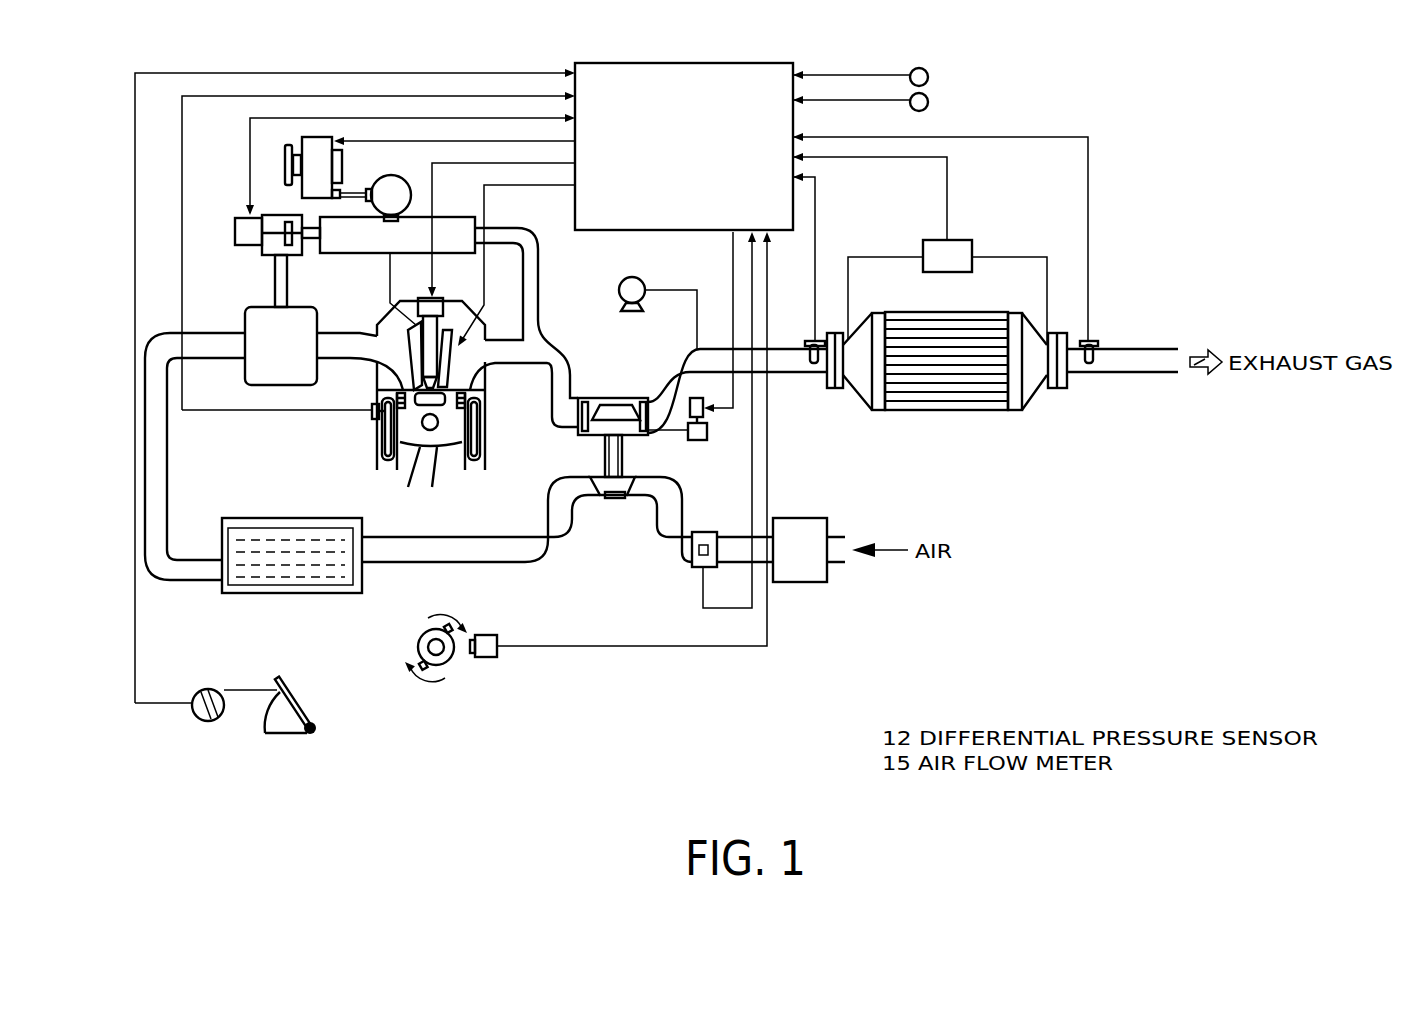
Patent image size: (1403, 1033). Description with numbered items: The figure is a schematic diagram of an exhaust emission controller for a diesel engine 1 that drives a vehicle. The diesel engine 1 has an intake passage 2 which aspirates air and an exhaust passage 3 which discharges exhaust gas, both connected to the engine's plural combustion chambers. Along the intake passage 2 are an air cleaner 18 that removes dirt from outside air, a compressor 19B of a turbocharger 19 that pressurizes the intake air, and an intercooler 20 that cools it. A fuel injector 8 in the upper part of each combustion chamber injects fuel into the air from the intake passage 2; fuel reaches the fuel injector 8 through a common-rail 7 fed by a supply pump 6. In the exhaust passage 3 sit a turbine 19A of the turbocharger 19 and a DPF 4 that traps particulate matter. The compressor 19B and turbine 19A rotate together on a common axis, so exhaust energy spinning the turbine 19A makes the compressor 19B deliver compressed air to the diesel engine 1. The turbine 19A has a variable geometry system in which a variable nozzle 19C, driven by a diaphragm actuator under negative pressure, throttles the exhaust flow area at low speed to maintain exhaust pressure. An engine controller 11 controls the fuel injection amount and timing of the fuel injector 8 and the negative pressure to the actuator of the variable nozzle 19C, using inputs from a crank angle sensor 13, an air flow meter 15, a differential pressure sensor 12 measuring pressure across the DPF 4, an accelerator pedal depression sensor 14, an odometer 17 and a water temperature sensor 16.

The diesel engine 1 is at (492, 378).
The intake passage 2 is at (168, 457).
The exhaust passage 3 is at (553, 347).
The DPF 4 is at (925, 411).
The supply pump 6 is at (318, 136).
The common-rail 7 is at (398, 176).
The fuel injector 8 is at (444, 300).
The engine controller 11 is at (748, 64).
The differential pressure sensor 12 is at (960, 240).
The crank angle sensor 13 is at (484, 658).
The accelerator pedal depression sensor 14 is at (200, 722).
The air flow meter 15 is at (703, 530).
The water temperature sensor 16 is at (929, 77).
The odometer 17 is at (929, 102).
The air cleaner 18 is at (822, 518).
The turbocharger 19 is at (584, 451).
The turbine 19A is at (620, 398).
The compressor 19B is at (612, 500).
The variable nozzle 19C is at (655, 432).
The intercooler 20 is at (367, 578).